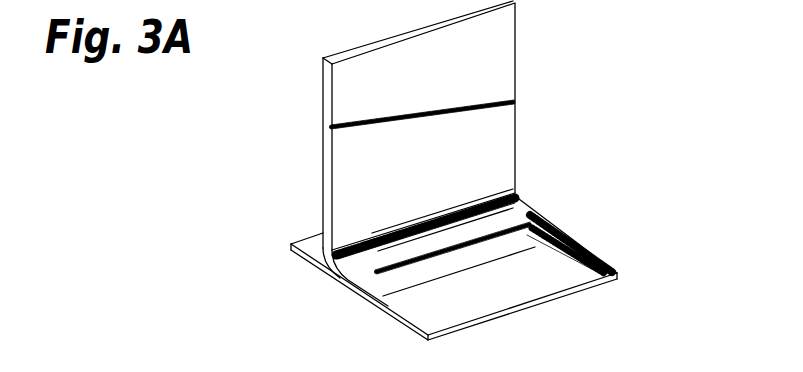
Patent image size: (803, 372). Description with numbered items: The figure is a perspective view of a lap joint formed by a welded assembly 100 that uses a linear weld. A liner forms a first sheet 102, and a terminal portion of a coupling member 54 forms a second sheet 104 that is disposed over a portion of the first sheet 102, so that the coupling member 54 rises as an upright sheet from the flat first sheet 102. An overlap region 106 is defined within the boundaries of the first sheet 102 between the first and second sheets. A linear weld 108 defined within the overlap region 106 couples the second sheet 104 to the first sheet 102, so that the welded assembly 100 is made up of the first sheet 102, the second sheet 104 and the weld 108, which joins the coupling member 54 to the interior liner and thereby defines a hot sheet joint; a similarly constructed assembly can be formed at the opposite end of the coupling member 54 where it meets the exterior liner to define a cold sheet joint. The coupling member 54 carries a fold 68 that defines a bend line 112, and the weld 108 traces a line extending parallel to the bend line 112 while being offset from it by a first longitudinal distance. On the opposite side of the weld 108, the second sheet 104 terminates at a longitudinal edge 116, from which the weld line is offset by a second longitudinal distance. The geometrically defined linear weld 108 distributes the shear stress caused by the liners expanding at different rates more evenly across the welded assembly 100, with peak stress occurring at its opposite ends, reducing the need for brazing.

The welded assembly 100 is at (601, 81).
The coupling member 54 is at (340, 82).
The fold 68 is at (519, 190).
The first sheet 102 is at (587, 250).
The second sheet 104 is at (542, 228).
The overlap region 106 is at (329, 283).
The linear weld 108 is at (463, 245).
The bend line 112 is at (398, 226).
The longitudinal edge 116 is at (453, 275).